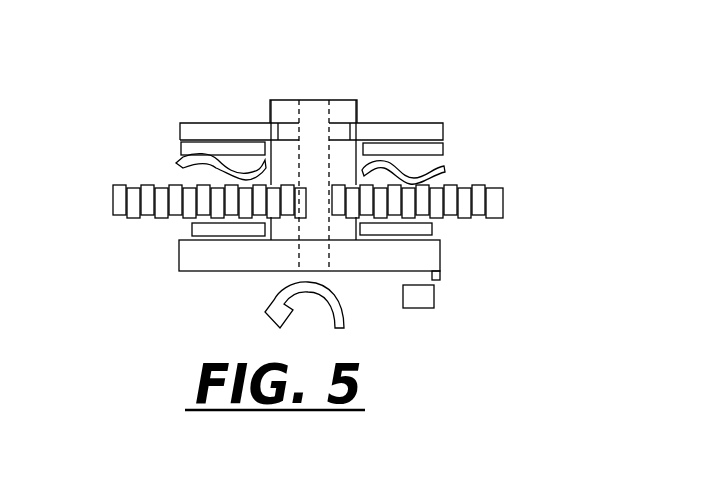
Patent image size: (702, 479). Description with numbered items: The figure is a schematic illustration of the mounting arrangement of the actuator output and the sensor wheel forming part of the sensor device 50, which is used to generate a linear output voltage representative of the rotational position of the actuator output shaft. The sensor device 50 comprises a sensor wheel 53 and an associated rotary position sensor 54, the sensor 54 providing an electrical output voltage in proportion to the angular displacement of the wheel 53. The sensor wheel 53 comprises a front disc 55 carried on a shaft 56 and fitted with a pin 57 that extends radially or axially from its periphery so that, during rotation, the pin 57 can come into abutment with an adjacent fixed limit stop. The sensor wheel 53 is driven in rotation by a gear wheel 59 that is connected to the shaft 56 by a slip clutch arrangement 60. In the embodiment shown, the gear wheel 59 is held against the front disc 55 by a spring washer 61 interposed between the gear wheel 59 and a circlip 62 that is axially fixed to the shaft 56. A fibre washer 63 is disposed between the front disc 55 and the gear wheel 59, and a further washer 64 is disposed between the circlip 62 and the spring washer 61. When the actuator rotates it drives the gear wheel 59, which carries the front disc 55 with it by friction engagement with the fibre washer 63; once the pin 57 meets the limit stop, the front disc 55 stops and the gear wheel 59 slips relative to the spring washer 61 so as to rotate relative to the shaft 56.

The sensor device 50 is at (96, 210).
The sensor wheel 53 is at (366, 278).
The rotary position sensor 54 is at (430, 308).
The front disc 55 is at (223, 263).
The shaft 56 is at (318, 104).
The pin 57 is at (440, 282).
The gear wheel 59 is at (503, 203).
The slip clutch arrangement 60 is at (462, 168).
The spring washer 61 is at (180, 158).
The circlip 62 is at (408, 123).
The fibre washer 63 is at (446, 233).
The further washer 64 is at (443, 148).